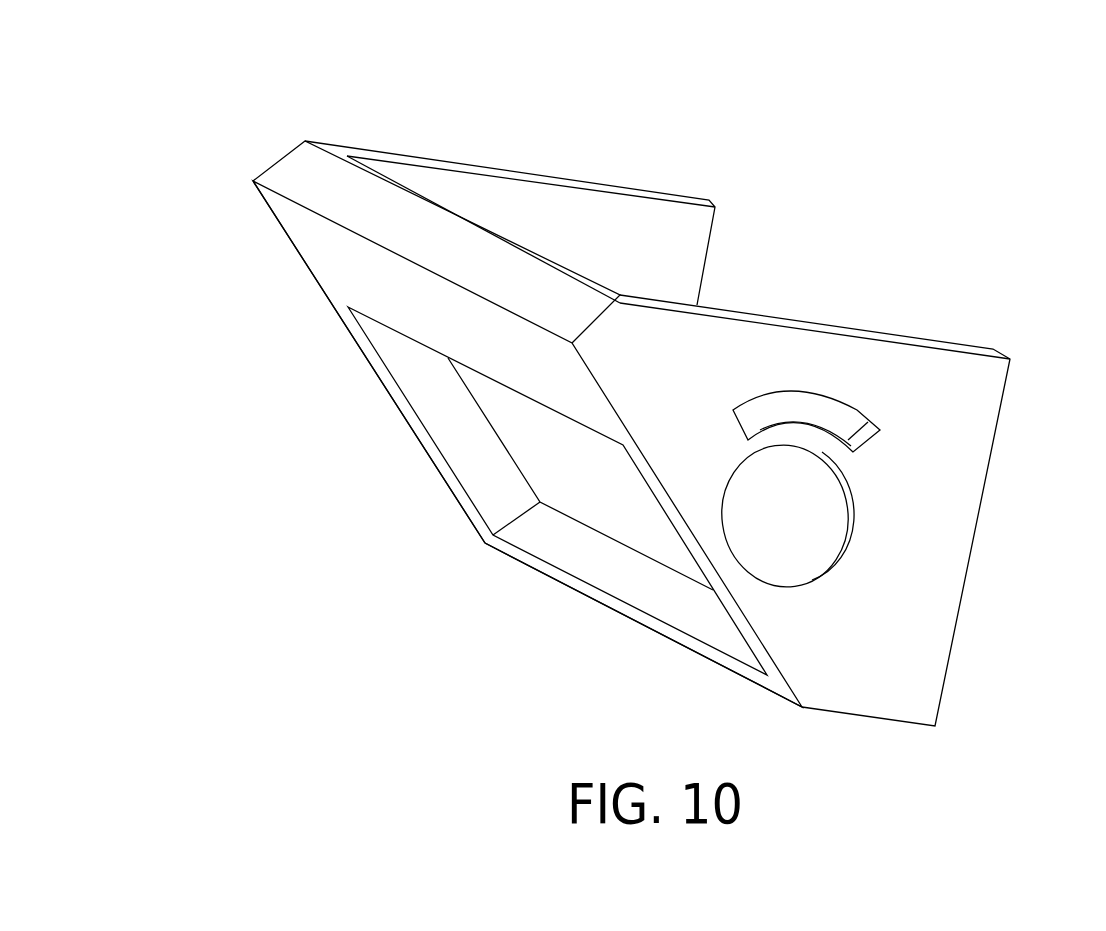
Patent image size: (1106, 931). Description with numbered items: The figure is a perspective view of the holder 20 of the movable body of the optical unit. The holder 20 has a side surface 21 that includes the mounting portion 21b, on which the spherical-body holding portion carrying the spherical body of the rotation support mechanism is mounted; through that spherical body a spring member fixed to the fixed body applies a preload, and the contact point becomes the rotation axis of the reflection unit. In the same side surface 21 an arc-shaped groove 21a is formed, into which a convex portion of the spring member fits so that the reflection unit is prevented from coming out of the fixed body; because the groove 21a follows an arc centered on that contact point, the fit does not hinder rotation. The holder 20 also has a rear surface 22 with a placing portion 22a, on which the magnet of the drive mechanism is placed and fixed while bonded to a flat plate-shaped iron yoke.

The holder 20 is at (978, 163).
The side surface 21 is at (598, 180).
The arc-shaped groove 21a is at (820, 407).
The mounting portion 21b is at (790, 512).
The rear surface 22 is at (350, 273).
The placing portion 22a is at (553, 452).